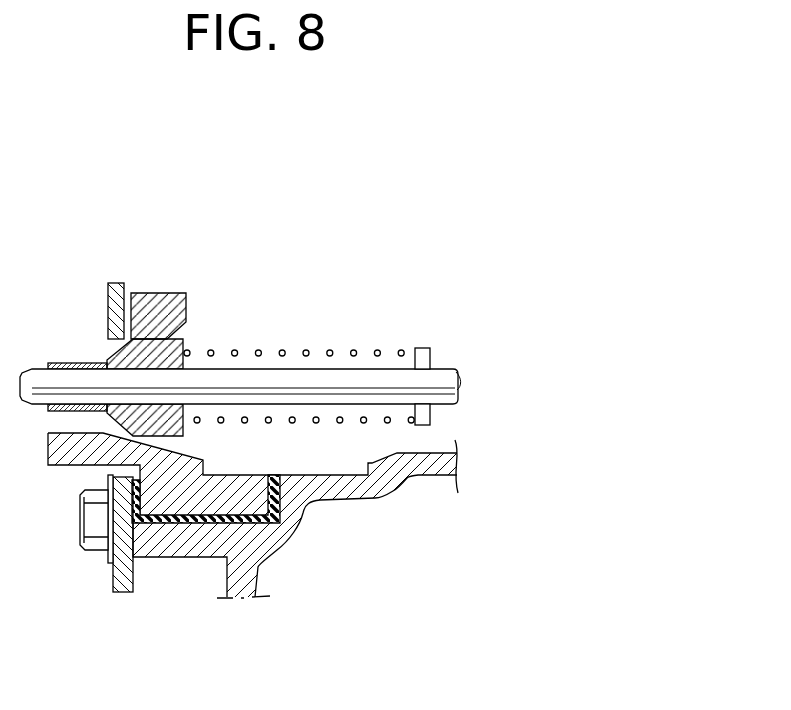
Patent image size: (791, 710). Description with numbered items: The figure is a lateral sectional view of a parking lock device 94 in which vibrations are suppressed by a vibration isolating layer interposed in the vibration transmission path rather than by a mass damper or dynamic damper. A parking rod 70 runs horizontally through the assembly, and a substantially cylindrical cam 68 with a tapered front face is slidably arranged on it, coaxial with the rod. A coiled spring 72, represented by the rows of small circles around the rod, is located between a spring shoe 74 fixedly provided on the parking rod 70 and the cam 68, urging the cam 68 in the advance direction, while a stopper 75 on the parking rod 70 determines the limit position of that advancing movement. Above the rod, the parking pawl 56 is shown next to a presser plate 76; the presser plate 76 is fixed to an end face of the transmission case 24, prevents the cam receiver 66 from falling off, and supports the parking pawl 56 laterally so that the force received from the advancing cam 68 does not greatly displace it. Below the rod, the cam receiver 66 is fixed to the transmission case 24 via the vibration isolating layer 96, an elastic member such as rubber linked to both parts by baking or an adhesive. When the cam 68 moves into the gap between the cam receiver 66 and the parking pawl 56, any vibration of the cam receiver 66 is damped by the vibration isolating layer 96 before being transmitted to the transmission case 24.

The parking lock device 94 is at (352, 253).
The transmission case 24 is at (180, 550).
The parking pawl 56 is at (173, 296).
The cam receiver 66 is at (252, 498).
The cam 68 is at (184, 343).
The parking rod 70 is at (335, 380).
The spring 72 is at (306, 352).
The spring shoe 74 is at (425, 350).
The stopper 75 is at (63, 363).
The presser plate 76 is at (115, 588).
The vibration isolating layer 96 is at (217, 513).